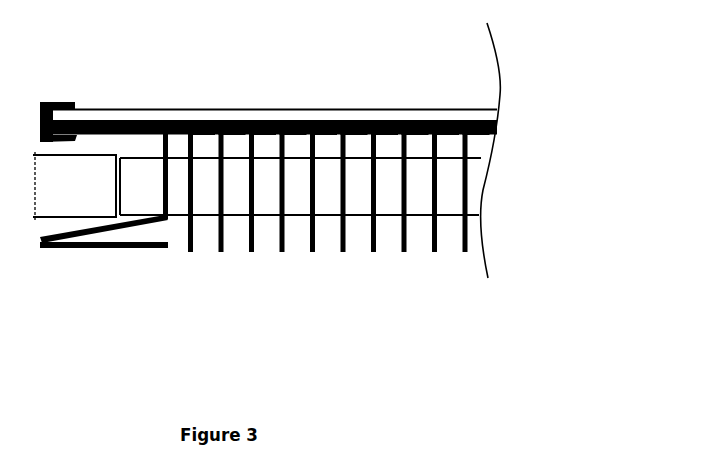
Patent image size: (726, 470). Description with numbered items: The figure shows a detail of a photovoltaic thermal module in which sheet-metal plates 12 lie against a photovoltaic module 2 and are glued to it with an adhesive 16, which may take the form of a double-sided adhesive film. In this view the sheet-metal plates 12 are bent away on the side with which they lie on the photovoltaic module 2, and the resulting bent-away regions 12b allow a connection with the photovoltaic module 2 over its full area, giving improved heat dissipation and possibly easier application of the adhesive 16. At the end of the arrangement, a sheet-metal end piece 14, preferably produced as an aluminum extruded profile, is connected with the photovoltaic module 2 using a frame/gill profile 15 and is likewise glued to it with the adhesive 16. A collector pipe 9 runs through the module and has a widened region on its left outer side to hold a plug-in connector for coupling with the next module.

The photovoltaic module 2 is at (470, 112).
The collector pipe 9 is at (470, 187).
The sheet-metal plates 12 is at (252, 250).
The bent-away regions 12b is at (318, 132).
The sheet-metal end piece 14 is at (120, 248).
The frame/gill profile 15 is at (62, 100).
The adhesive 16 is at (282, 125).